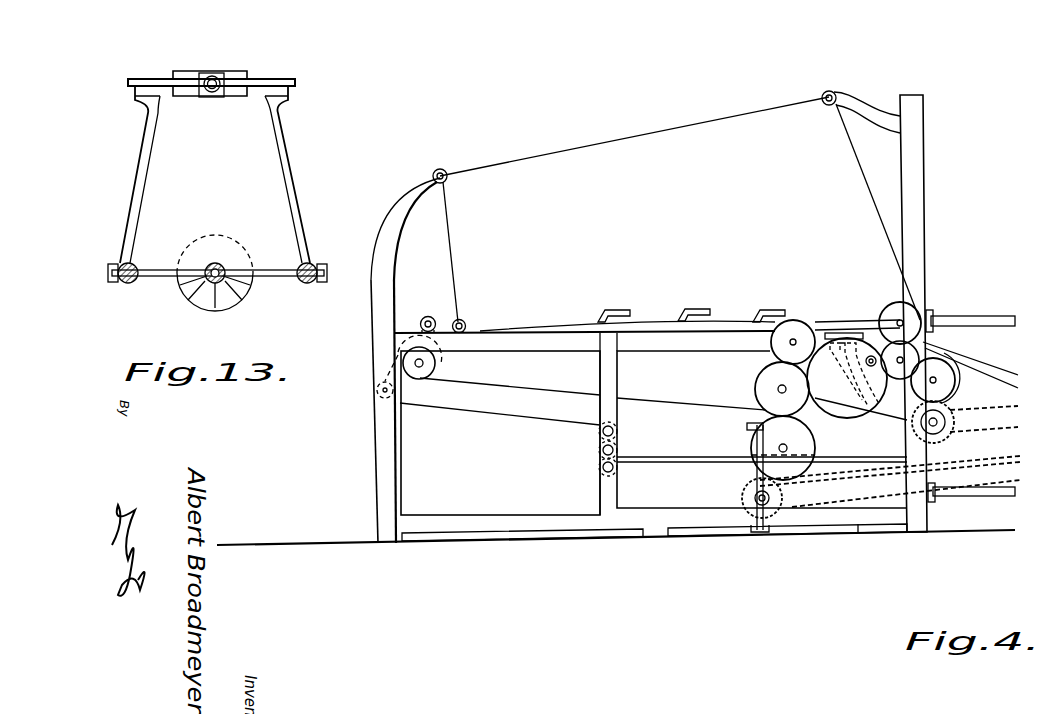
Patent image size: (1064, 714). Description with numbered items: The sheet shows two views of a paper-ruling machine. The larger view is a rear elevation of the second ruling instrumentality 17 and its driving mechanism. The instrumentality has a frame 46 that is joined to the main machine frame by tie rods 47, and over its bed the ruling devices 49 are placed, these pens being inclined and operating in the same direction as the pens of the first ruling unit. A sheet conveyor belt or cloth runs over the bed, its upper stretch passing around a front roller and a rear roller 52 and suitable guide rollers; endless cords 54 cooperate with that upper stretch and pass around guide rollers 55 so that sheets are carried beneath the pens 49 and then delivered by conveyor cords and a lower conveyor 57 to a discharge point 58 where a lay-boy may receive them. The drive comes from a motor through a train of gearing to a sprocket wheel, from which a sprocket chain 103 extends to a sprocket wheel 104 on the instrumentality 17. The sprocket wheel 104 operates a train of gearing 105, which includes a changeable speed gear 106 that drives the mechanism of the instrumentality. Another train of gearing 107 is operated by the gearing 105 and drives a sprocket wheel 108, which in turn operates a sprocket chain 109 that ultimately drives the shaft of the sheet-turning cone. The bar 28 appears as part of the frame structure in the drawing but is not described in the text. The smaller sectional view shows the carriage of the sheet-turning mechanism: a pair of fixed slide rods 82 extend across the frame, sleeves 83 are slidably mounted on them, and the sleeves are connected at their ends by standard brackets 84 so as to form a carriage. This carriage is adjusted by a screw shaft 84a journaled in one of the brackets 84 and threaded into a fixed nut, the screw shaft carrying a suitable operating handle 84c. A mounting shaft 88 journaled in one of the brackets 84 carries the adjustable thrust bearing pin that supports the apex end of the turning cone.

In FIG. 13, the mounting shaft 88 is at (212, 70).
In FIG. 13, the standard brackets 84 is at (298, 198).
In FIG. 13, the sleeves 83 is at (137, 264).
In FIG. 13, the fixed slide rods 82 is at (128, 284).
In FIG. 13, the screw shaft 84a is at (222, 266).
In FIG. 13, the operating handle 84c is at (232, 311).
In FIG. 4, the second ruling instrumentality 17 is at (634, 182).
In FIG. 4, the endless cords 54 is at (655, 128).
In FIG. 4, the guide rollers 55 is at (447, 178).
In FIG. 4, the ruling devices 49 is at (604, 310).
In FIG. 4, the table 28 is at (665, 331).
In FIG. 4, the rear roller 52 is at (436, 364).
In FIG. 4, the discharge point 58 is at (586, 467).
In FIG. 4, the frame 46 is at (493, 518).
In FIG. 4, the lower conveyor 57 is at (645, 477).
In FIG. 4, the sprocket wheel 104 is at (750, 499).
In FIG. 4, the train of gearing 105 is at (803, 444).
In FIG. 4, the changeable speed gear 106 is at (843, 345).
In FIG. 4, the sprocket chain 103 is at (873, 498).
In FIG. 4, the train of gearing 107 is at (930, 357).
In FIG. 4, the sprocket wheel 108 is at (950, 438).
In FIG. 4, the sprocket chain 109 is at (978, 405).
In FIG. 4, the tie rods 47 is at (1000, 320).